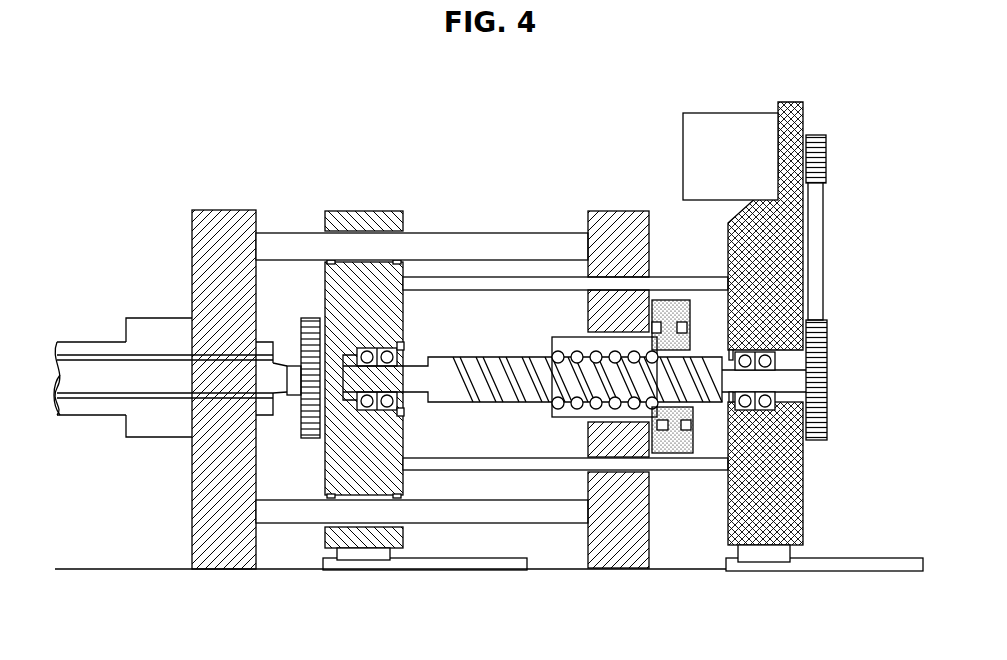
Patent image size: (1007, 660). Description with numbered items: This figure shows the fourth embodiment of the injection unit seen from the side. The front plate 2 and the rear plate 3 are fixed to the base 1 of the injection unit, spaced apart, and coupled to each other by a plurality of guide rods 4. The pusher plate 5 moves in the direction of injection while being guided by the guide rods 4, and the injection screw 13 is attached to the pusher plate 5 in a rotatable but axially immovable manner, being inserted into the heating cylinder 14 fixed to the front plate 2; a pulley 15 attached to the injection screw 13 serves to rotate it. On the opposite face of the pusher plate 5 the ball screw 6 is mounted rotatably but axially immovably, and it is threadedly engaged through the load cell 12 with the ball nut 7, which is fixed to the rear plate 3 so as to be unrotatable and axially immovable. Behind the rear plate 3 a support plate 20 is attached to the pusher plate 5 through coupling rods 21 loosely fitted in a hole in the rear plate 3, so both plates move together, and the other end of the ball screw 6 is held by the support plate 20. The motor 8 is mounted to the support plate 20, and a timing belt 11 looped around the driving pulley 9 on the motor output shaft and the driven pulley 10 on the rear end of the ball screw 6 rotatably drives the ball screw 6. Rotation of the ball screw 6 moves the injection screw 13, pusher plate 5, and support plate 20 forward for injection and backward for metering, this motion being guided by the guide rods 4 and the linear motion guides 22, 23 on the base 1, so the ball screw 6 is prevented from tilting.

The base 1 is at (118, 570).
The front plate 2 is at (192, 458).
The rear plate 3 is at (612, 211).
The guide rods 4 is at (488, 240).
The pusher plate 5 is at (358, 211).
The ball screw 6 is at (530, 357).
The ball nut 7 is at (553, 417).
The injection motor 8 is at (743, 113).
The driving pulley 9 is at (826, 138).
The driven pulley 10 is at (827, 437).
The timing belt 11 is at (826, 236).
The load cell 12 is at (668, 300).
The injection screw 13 is at (173, 367).
The heating cylinder 14 is at (97, 346).
The pulley 15 is at (310, 318).
The support plate 20 is at (803, 498).
The coupling rods 21 is at (517, 277).
The linear motion guide 22 is at (368, 562).
The linear motion guide 23 is at (752, 562).